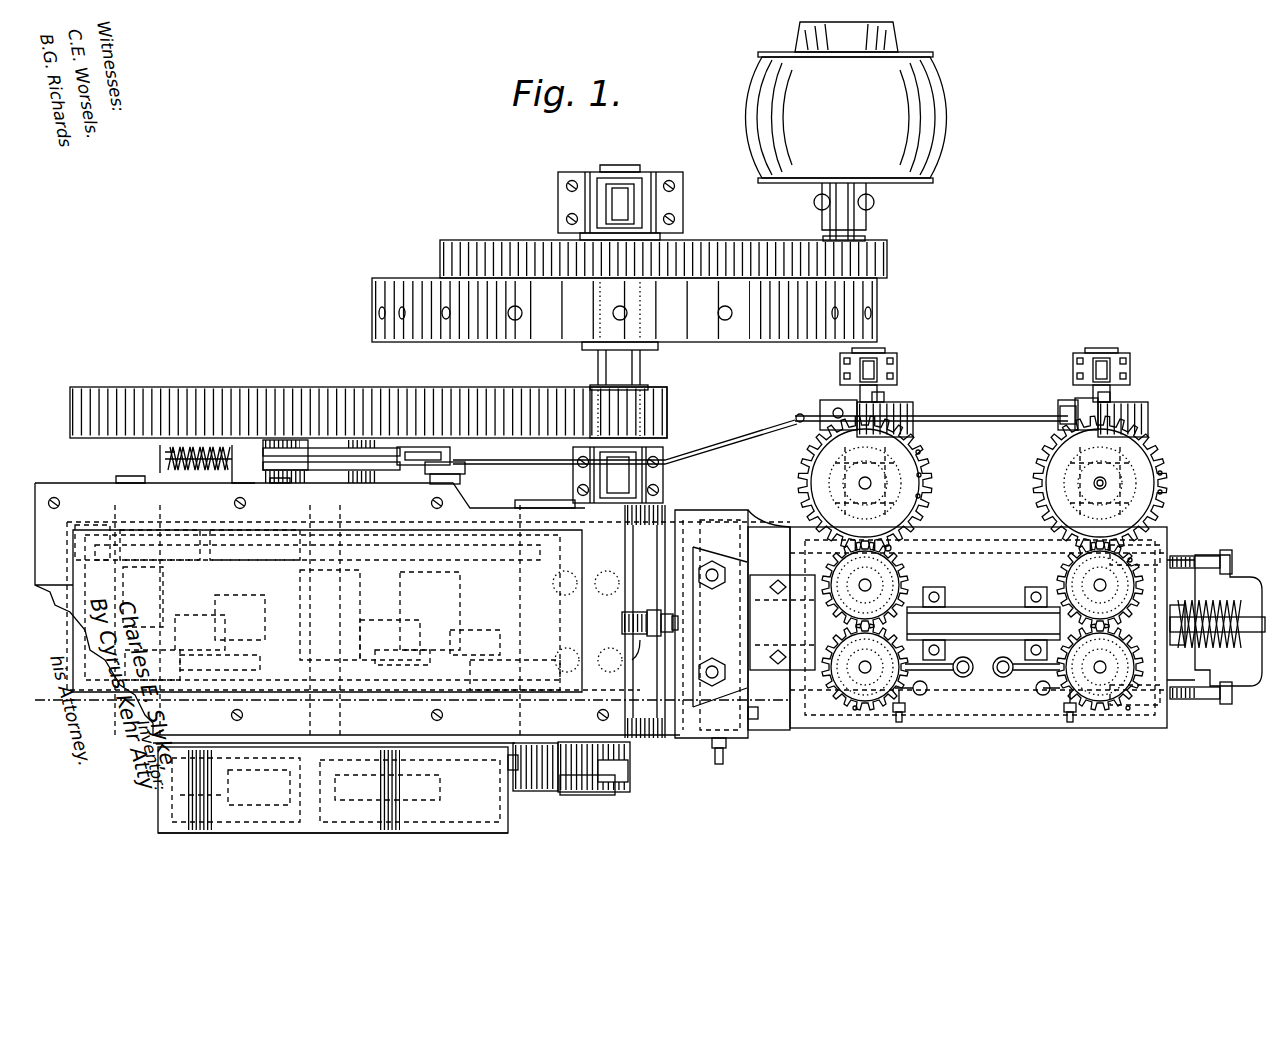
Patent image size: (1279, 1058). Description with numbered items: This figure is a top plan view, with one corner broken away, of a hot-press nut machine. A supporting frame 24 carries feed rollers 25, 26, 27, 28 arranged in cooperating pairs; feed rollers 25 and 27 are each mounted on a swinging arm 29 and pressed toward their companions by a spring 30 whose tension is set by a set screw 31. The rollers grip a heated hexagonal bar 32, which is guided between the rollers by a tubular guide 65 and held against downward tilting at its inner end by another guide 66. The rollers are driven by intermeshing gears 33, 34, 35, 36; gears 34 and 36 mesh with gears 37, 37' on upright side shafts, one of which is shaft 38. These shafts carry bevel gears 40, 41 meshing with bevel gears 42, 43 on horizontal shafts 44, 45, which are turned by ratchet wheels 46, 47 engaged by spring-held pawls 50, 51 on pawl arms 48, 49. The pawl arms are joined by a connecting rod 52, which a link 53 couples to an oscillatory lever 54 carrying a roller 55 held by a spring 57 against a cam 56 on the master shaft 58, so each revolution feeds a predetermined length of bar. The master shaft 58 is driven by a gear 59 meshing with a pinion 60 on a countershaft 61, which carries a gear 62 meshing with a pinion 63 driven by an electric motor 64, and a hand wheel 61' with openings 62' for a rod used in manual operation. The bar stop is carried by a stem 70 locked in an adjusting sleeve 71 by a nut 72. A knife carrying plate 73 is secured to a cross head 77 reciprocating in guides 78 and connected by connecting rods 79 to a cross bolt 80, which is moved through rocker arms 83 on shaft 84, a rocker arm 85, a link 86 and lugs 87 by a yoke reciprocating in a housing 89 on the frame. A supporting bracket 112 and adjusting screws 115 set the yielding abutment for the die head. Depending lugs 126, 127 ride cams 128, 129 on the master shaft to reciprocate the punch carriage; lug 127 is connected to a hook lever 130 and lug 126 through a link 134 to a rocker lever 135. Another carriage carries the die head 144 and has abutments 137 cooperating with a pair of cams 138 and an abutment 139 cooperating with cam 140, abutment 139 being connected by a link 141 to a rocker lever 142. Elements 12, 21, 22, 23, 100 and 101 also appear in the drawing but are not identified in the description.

The hatched member 12 is at (392, 778).
The lower casing 21 is at (265, 793).
The hatched bar 22 is at (226, 770).
The casing part 23 is at (202, 797).
The supporting frame 24 is at (480, 522).
The feed roller 25 is at (1110, 710).
The feed roller 26 is at (1130, 560).
The feed roller 27 is at (840, 700).
The feed roller 28 is at (905, 558).
The swinging arm 29 is at (945, 670).
The spring 30 is at (912, 700).
The set screw 31 is at (897, 722).
The bar 32 is at (862, 483).
The gear 33 is at (1128, 710).
The gear 34 is at (1070, 548).
The gear 35 is at (855, 710).
The gear 36 is at (890, 548).
The gear 37 is at (1119, 483).
The gear 37' is at (938, 447).
The shaft 38 is at (1102, 481).
The bevel gear 40 is at (1162, 473).
The bevel gear 41 is at (921, 475).
The bevel gear 42 is at (1162, 492).
The bevel gear 43 is at (920, 496).
The horizontal shaft 44 is at (1110, 350).
The horizontal shaft 45 is at (878, 350).
The ratchet wheel 46 is at (1150, 418).
The ratchet wheel 47 is at (905, 410).
The pawl arm 48 is at (1105, 398).
The pawl arm 49 is at (884, 395).
The pawl 50 is at (1140, 406).
The pawl 51 is at (825, 408).
The connecting rod 52 is at (955, 418).
The link 53 is at (768, 432).
The oscillatory lever 54 is at (452, 468).
The roller 55 is at (450, 457).
The cam 56 is at (340, 455).
The spring 57 is at (158, 455).
The master shaft 58 is at (355, 508).
The gear 59 is at (272, 388).
The pinion 60 is at (668, 416).
The countershaft 61 is at (635, 370).
The hand wheel 61' is at (740, 306).
The gear 62 is at (589, 204).
The openings 62' is at (624, 322).
The pinion 63 is at (888, 262).
The electric motor 64 is at (846, 131).
The tubular guide 65 is at (975, 620).
The guide 66 is at (770, 575).
The stem 70 is at (622, 623).
The adjusting sleeve 71 is at (679, 622).
The nut 72 is at (650, 612).
The knife carrying plate 73 is at (699, 672).
The cross head 77 is at (768, 535).
The guides 78 is at (692, 762).
The connecting rods 79 is at (699, 575).
The cross bolt 80 is at (720, 619).
The rocker arms 83 is at (587, 631).
The shaft 84 is at (605, 770).
The rocker arm 85 is at (585, 793).
The link 86 is at (520, 793).
The lugs 87 is at (496, 787).
The housing 89 is at (500, 830).
The spring 100 is at (1205, 615).
The shaft 101 is at (1185, 650).
The supporting bracket 112 is at (1215, 686).
The adjusting screws 115 is at (1190, 554).
The depending lug 126 is at (200, 630).
The depending lug 127 is at (392, 640).
The cam 128 is at (402, 655).
The cam 129 is at (250, 612).
The hook lever 130 is at (475, 641).
The link 134 is at (220, 665).
The rocker lever 135 is at (143, 624).
The depending lugs 137 is at (420, 577).
The cams 138 is at (300, 577).
The depending abutment 139 is at (255, 531).
The cam 140 is at (428, 620).
The link 141 is at (160, 530).
The rocker lever 142 is at (93, 530).
The die head 144 is at (648, 658).